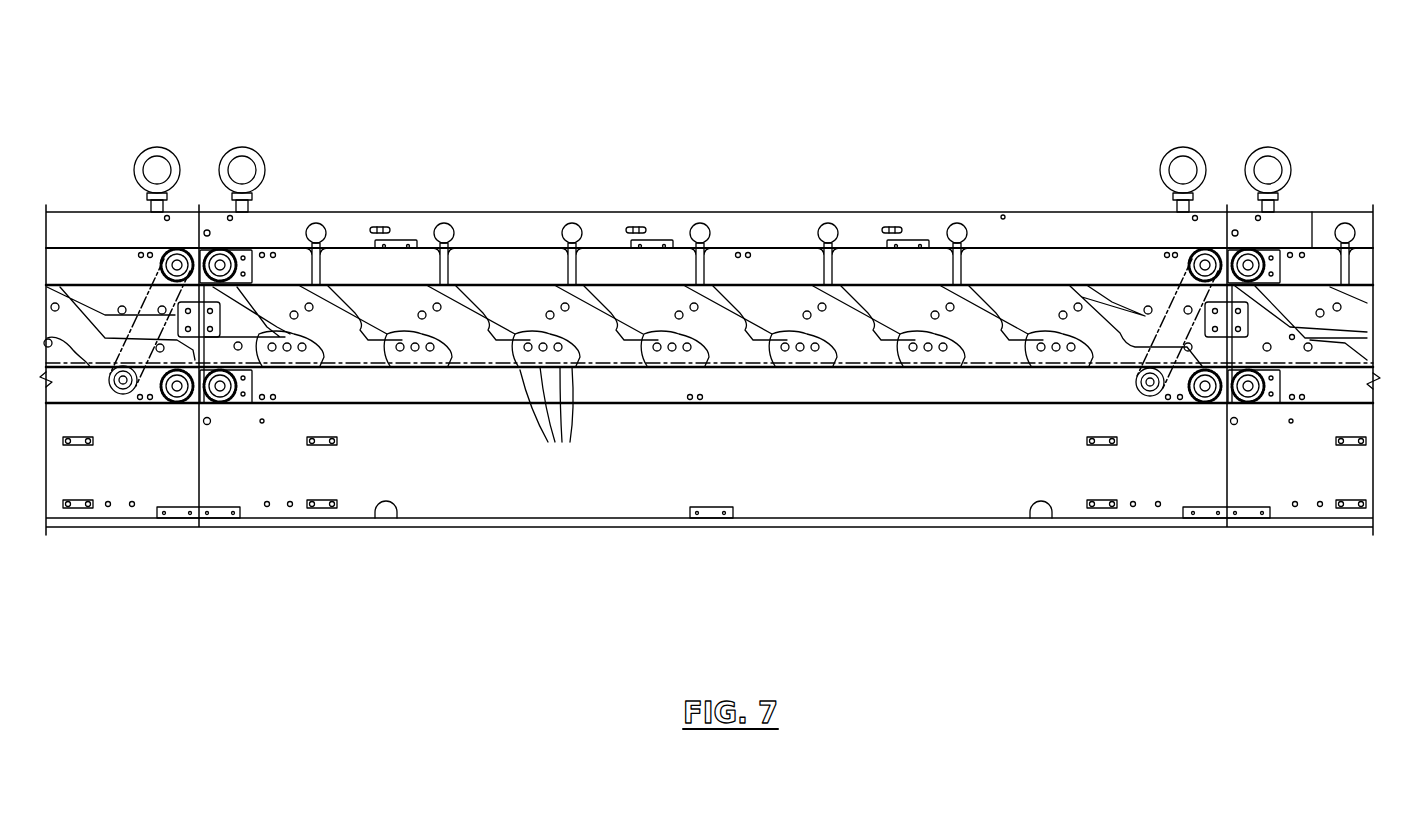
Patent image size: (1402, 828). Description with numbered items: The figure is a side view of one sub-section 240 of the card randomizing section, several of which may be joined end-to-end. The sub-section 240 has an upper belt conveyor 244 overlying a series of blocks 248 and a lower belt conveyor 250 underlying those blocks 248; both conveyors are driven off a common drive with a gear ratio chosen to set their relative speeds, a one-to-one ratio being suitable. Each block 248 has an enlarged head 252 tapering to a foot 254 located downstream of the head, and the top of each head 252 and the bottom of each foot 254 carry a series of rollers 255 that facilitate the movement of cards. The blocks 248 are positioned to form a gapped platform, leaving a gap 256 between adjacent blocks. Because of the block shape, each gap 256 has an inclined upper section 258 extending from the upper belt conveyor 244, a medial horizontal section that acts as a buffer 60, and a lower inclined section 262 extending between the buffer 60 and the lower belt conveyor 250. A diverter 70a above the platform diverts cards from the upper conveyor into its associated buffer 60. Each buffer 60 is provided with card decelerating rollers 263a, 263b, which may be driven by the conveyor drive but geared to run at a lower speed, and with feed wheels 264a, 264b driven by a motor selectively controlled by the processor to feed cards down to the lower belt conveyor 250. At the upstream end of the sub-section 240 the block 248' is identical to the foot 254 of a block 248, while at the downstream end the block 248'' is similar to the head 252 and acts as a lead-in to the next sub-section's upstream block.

The sub-section 240 is at (645, 133).
The upper belt conveyor 244 is at (1060, 246).
The block 248 is at (356, 241).
The upstream end block 248' is at (284, 388).
The downstream end block 248'' is at (1136, 232).
The diverter 70a is at (570, 262).
The gap 256 is at (843, 275).
The inclined upper section 258 is at (815, 292).
The enlarged head 252 is at (930, 319).
The buffer 60 is at (870, 337).
The foot 254 is at (1034, 363).
The lower inclined section 262 is at (976, 372).
The lower belt conveyor 250 is at (938, 403).
The card decelerating roller 263a is at (368, 366).
The card decelerating roller 263b is at (390, 366).
The rollers 255 is at (551, 421).
The feed wheel 264a is at (792, 367).
The feed wheel 264b is at (821, 367).